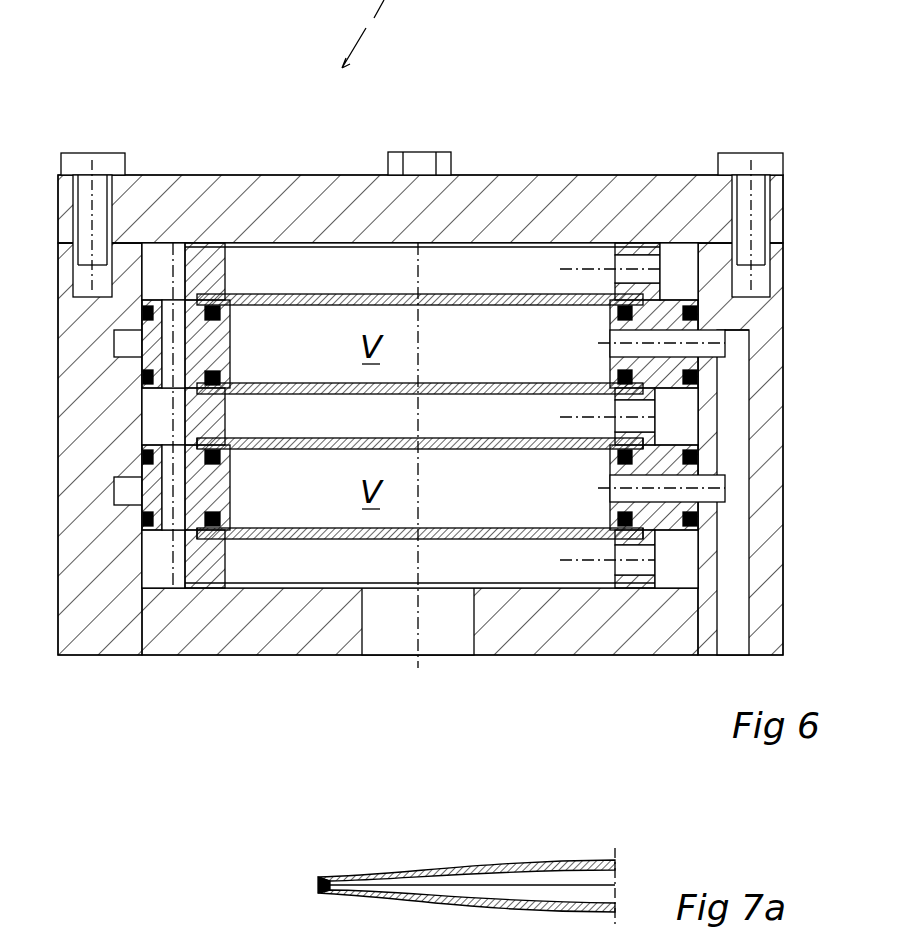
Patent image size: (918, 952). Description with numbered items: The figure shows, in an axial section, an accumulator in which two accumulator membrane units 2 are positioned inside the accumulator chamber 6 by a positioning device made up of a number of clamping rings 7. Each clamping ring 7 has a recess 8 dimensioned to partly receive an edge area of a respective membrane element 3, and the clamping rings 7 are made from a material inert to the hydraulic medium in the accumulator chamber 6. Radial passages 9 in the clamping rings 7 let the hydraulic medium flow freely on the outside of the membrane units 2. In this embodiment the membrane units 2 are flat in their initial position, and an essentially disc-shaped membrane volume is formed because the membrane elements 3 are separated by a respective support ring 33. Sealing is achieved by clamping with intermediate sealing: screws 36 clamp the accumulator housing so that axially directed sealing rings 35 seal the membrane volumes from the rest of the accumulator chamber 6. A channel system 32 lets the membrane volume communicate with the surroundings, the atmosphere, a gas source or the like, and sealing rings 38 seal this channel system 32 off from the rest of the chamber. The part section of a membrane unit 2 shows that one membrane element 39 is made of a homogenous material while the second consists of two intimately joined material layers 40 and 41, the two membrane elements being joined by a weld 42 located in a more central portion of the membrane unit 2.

In FIG. 6, the accumulator membrane unit 2 is at (460, 320).
In FIG. 7A, the accumulator membrane unit 2 is at (462, 868).
In FIG. 6, the membrane element 3 is at (493, 304).
In FIG. 6, the accumulator chamber 6 is at (165, 255).
In FIG. 6, the clamping ring 7 is at (197, 272).
In FIG. 6, the recess 8 is at (222, 297).
In FIG. 6, the radial passage 9 is at (633, 262).
In FIG. 6, the channel system 32 is at (615, 338).
In FIG. 6, the support ring 33 is at (220, 487).
In FIG. 6, the sealing ring 35 is at (214, 448).
In FIG. 6, the screw 36 is at (97, 165).
In FIG. 6, the sealing ring 38 is at (688, 372).
In FIG. 7A, the membrane element 39 is at (518, 867).
In FIG. 7A, the material layer 40 is at (530, 898).
In FIG. 7A, the material layer 41 is at (482, 905).
In FIG. 7A, the weld 42 is at (313, 877).